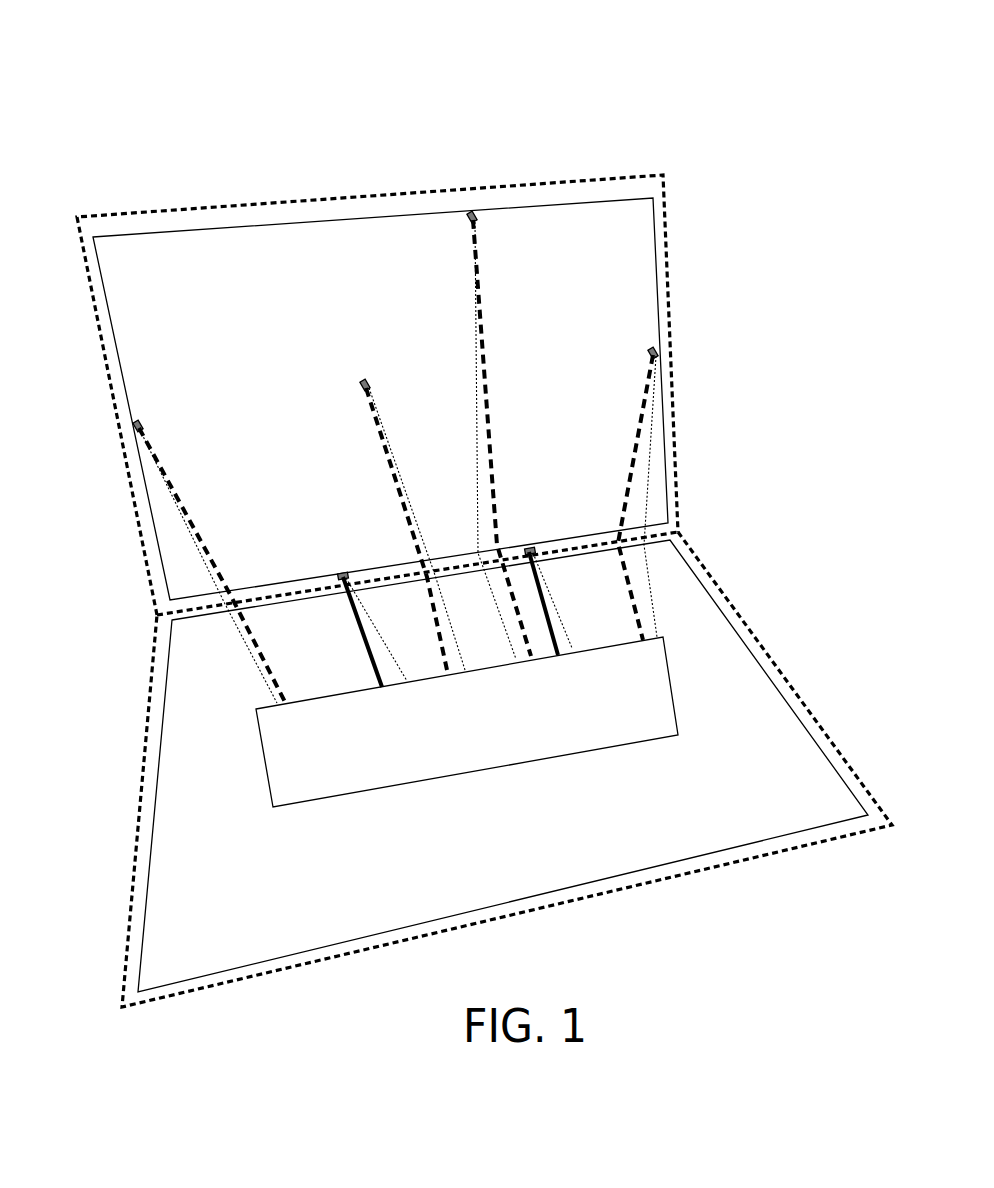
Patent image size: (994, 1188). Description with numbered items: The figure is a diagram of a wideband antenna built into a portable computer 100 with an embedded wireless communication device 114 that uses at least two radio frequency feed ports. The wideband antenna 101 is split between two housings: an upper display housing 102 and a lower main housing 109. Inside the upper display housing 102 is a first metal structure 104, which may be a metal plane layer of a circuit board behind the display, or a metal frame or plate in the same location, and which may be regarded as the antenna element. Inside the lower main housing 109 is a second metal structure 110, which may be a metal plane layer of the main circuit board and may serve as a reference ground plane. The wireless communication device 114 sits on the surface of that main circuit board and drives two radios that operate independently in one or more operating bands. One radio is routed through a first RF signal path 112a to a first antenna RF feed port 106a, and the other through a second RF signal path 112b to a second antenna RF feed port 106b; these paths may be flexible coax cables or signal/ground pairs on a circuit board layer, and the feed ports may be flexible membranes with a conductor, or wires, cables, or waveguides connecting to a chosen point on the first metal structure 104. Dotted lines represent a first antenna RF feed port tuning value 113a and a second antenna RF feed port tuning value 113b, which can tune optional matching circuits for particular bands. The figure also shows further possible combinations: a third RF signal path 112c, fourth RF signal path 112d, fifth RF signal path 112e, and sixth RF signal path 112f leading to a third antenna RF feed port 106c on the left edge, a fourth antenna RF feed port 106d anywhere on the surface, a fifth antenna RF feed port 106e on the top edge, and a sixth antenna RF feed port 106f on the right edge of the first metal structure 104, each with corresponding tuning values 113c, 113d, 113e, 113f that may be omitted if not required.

The portable computer 100 is at (322, 104).
The wideband antenna 101 is at (378, 313).
The upper display housing 102 is at (676, 257).
The first metal structure 104 is at (612, 331).
The first antenna RF feed port 106a is at (341, 574).
The second antenna RF feed port 106b is at (529, 547).
The third antenna RF feed port 106c is at (134, 425).
The fourth antenna RF feed port 106d is at (360, 385).
The fifth antenna RF feed port 106e is at (478, 214).
The sixth antenna RF feed port 106f is at (660, 356).
The lower main housing 109 is at (758, 638).
The second metal structure 110 is at (724, 724).
The first RF signal path 112a is at (352, 613).
The second RF signal path 112b is at (562, 637).
The third RF signal path 112c is at (178, 484).
The fourth RF signal path 112d is at (380, 436).
The fifth RF signal path 112e is at (484, 317).
The sixth RF signal path 112f is at (628, 442).
The first antenna RF feed port tuning value 113a is at (390, 611).
The second antenna RF feed port tuning value 113b is at (553, 598).
The antenna RF feed port tuning value 113c is at (170, 493).
The antenna RF feed port tuning value 113d is at (384, 427).
The antenna RF feed port tuning value 113e is at (478, 502).
The antenna RF feed port tuning value 113f is at (641, 488).
The wireless communication device 114 is at (256, 751).